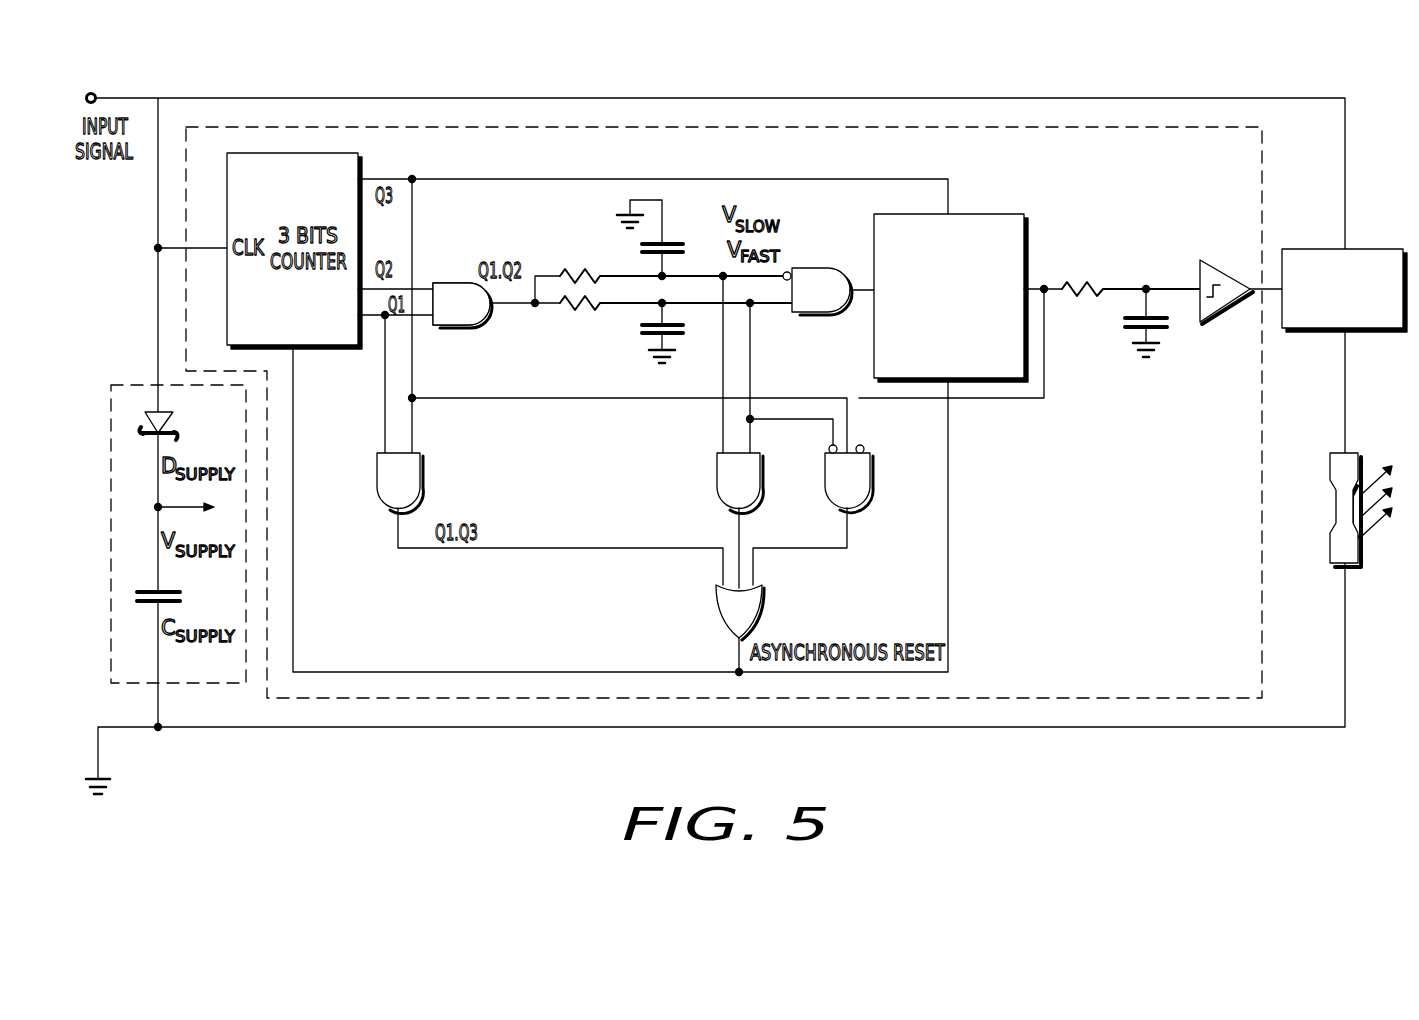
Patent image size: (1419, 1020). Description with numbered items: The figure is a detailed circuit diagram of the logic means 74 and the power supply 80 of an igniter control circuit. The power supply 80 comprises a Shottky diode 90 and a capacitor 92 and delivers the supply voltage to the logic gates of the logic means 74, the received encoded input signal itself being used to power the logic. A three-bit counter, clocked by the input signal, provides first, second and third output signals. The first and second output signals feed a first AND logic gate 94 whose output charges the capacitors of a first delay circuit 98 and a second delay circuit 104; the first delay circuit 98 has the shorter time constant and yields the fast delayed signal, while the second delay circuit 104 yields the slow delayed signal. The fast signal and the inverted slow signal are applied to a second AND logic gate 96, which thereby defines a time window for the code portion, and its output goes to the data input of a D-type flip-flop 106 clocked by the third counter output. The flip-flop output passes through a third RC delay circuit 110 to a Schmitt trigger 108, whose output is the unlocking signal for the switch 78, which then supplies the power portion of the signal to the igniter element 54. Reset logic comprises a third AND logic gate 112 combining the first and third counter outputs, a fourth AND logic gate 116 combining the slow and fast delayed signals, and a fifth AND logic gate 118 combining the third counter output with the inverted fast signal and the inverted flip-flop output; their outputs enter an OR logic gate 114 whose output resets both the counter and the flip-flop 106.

The igniter element 54 is at (1330, 470).
The logic means 74 is at (1148, 698).
The switch 78 is at (1312, 249).
The power supply 80 is at (196, 683).
The Shottky diode 90 is at (165, 412).
The capacitor 92 is at (171, 590).
The first AND logic gate 94 is at (474, 326).
The second AND logic gate 96 is at (818, 268).
The first delay circuit 98 is at (620, 327).
The second delay circuit 104 is at (611, 251).
The D-type flip-flop 106 is at (985, 214).
The Schmitt trigger 108 is at (1222, 268).
The third RC delay circuit 110 is at (1122, 304).
The third AND logic gate 112 is at (424, 478).
The OR logic gate 114 is at (718, 618).
The fourth AND logic gate 116 is at (716, 490).
The fifth AND logic gate 118 is at (872, 490).